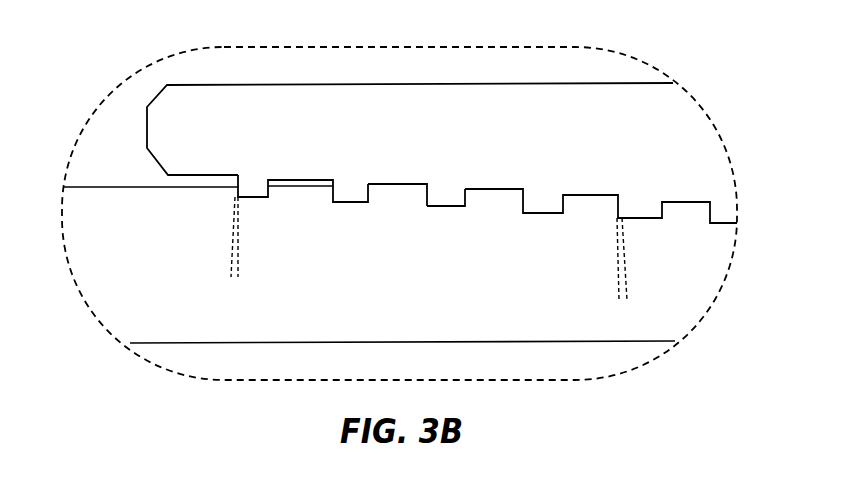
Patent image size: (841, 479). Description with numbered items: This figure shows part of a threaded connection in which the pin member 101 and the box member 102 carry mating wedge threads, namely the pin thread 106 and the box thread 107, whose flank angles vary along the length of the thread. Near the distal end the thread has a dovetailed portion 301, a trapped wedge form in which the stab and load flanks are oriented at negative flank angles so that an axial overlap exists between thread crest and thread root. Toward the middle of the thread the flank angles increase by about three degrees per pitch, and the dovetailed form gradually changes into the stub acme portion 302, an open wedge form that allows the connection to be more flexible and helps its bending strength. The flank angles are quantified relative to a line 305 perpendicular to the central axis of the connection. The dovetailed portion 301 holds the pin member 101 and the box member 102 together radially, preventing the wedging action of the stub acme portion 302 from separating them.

The pin member 101 is at (153, 242).
The box member 102 is at (575, 125).
The pin thread 106 is at (408, 193).
The box thread 107 is at (450, 197).
The dovetailed portion 301 is at (467, 162).
The stub acme portion 302 is at (727, 177).
The line perpendicular to the central axis 305 is at (197, 255).